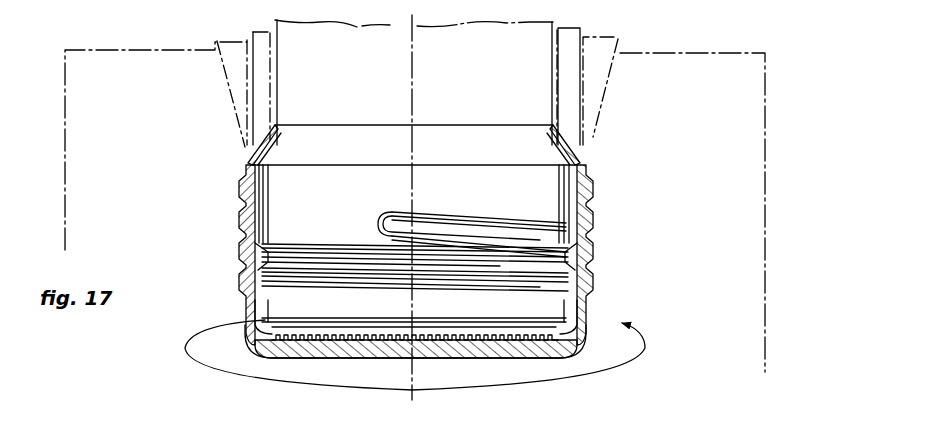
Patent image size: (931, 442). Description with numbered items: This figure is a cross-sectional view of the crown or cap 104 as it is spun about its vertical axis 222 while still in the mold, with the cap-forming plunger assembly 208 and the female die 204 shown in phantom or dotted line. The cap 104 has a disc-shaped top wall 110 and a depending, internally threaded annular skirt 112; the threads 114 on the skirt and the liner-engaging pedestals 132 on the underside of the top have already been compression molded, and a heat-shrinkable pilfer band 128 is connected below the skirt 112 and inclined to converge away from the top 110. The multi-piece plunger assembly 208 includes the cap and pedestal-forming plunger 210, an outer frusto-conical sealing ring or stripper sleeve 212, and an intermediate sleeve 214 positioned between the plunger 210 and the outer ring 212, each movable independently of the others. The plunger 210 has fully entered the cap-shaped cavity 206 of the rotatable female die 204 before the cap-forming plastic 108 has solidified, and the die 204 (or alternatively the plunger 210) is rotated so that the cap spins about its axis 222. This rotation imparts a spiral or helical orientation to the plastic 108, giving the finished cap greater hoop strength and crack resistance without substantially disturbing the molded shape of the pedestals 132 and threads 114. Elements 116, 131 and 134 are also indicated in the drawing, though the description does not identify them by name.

The cap 104 is at (242, 209).
The cap-forming plastic 108 is at (590, 241).
The top wall disc-shaped portion 110 is at (573, 393).
The annular skirt 112 is at (259, 196).
The threads 114 is at (589, 286).
The bottom panel 116 is at (440, 318).
The pilfer band 128 is at (264, 150).
The container wall 131 is at (275, 72).
The liner-engaging pedestals 132 is at (375, 338).
The bottom hatched layer 134 is at (470, 342).
The rotatable female die 204 is at (765, 207).
The cap-shaped cavity 206 is at (551, 72).
The cap-forming plunger assembly 208 is at (170, 129).
The cap and pedestal-forming plunger 210 is at (380, 25).
The outer frusto-conical sealing ring 212 is at (231, 103).
The intermediate sleeve 214 is at (580, 27).
The vertical axis 222 is at (412, 75).